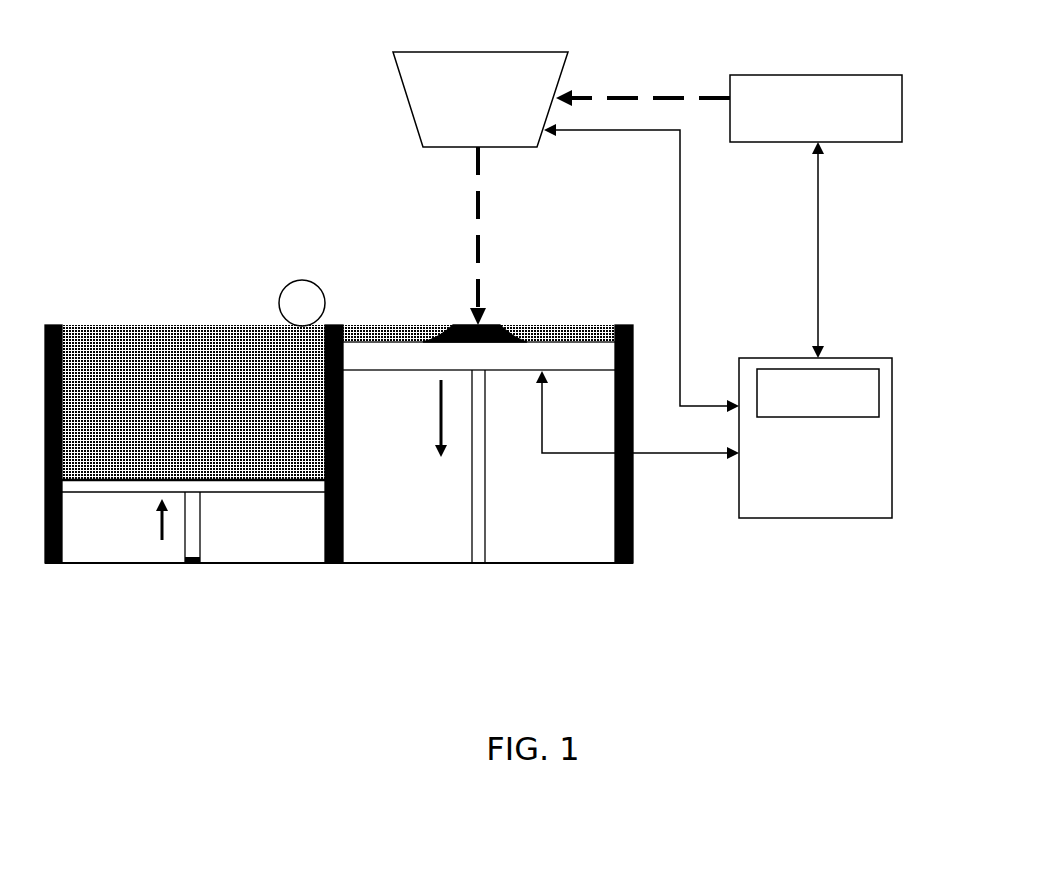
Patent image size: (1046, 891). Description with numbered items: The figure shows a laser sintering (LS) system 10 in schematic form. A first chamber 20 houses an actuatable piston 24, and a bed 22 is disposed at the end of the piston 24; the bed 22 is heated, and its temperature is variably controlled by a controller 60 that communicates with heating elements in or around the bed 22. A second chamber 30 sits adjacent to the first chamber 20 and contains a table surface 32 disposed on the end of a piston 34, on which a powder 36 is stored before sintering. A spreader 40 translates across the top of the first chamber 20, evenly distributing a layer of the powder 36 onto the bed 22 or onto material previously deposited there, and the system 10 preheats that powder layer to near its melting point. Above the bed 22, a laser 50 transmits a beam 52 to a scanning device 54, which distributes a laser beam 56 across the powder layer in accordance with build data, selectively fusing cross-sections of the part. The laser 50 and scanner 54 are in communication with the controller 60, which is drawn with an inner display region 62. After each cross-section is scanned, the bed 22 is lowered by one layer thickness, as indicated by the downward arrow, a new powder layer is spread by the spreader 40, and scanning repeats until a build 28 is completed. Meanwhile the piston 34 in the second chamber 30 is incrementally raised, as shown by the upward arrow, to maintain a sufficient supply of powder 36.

The LS system 10 is at (260, 93).
The first chamber 20 is at (410, 530).
The bed 22 is at (372, 357).
The piston 24 is at (487, 535).
The build 28 is at (455, 325).
The second chamber 30 is at (115, 543).
The table surface 32 is at (268, 487).
The piston 34 is at (203, 530).
The powder 36 is at (113, 340).
The spreader 40 is at (280, 285).
The laser 50 is at (875, 75).
The beam 52 is at (617, 97).
The scanning device 54 is at (485, 50).
The laser beam 56 is at (480, 243).
The controller 60 is at (853, 358).
The display 62 is at (858, 405).